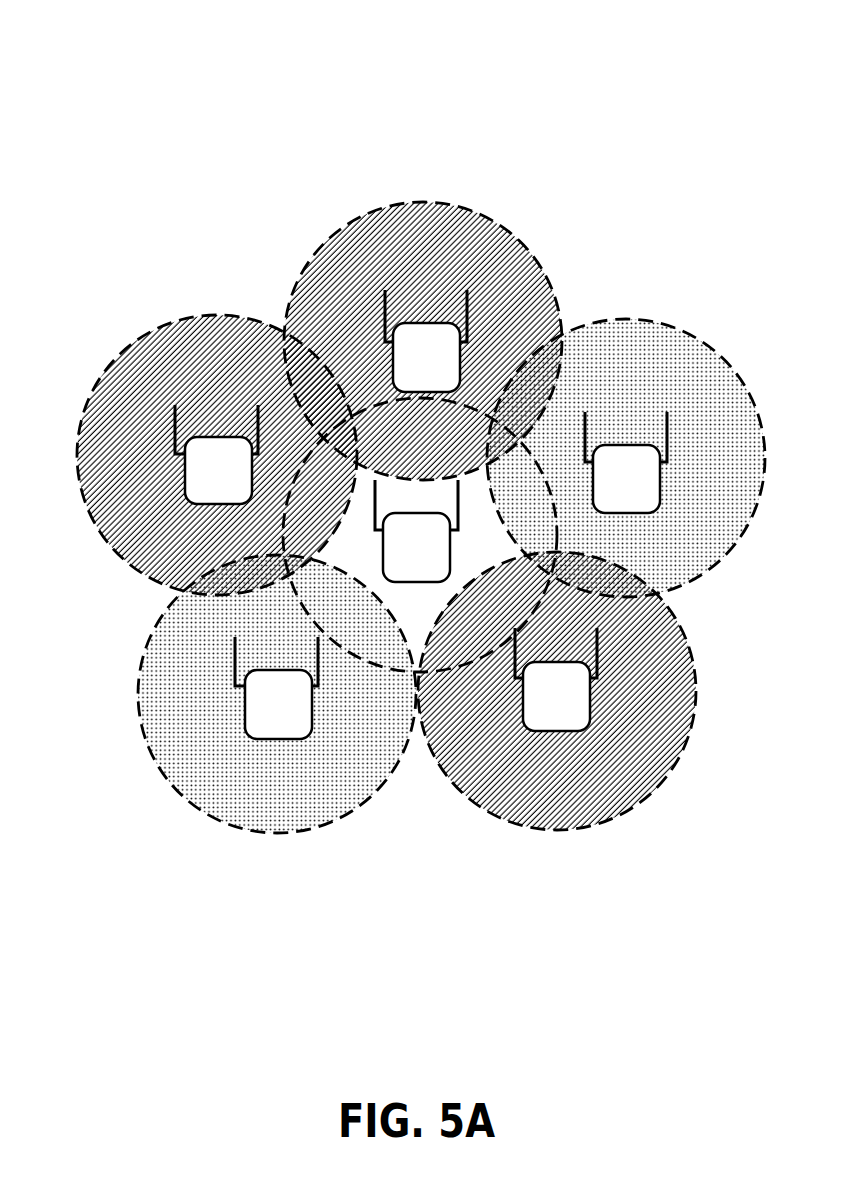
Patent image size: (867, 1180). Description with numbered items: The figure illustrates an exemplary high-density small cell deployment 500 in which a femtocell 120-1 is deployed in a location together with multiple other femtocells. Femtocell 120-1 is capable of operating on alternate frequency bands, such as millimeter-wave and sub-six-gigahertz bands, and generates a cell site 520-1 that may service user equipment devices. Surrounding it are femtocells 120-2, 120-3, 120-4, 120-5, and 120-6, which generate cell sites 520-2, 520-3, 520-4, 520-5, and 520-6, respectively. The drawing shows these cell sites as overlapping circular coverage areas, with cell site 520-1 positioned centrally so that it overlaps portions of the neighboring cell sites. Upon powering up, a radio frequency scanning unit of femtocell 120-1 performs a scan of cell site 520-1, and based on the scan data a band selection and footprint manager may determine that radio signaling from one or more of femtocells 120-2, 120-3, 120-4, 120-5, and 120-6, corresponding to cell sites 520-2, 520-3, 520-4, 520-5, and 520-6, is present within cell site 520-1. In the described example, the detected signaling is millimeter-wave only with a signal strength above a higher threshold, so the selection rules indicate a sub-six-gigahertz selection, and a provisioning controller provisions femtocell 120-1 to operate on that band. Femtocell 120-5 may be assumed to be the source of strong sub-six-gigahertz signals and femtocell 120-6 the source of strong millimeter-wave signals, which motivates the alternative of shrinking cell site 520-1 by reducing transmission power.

The wireless network environment 500 is at (220, 58).
The cell site 520-1 is at (503, 417).
The cell site 520-2 is at (450, 202).
The cell site 520-3 is at (712, 352).
The cell site 520-4 is at (693, 722).
The cell site 520-5 is at (248, 827).
The cell site 520-6 is at (125, 345).
The femtocell 120-1 is at (416, 531).
The femtocell 120-2 is at (426, 341).
The femtocell 120-3 is at (626, 462).
The femtocell 120-4 is at (556, 679).
The femtocell 120-5 is at (276, 688).
The femtocell 120-6 is at (216, 454).